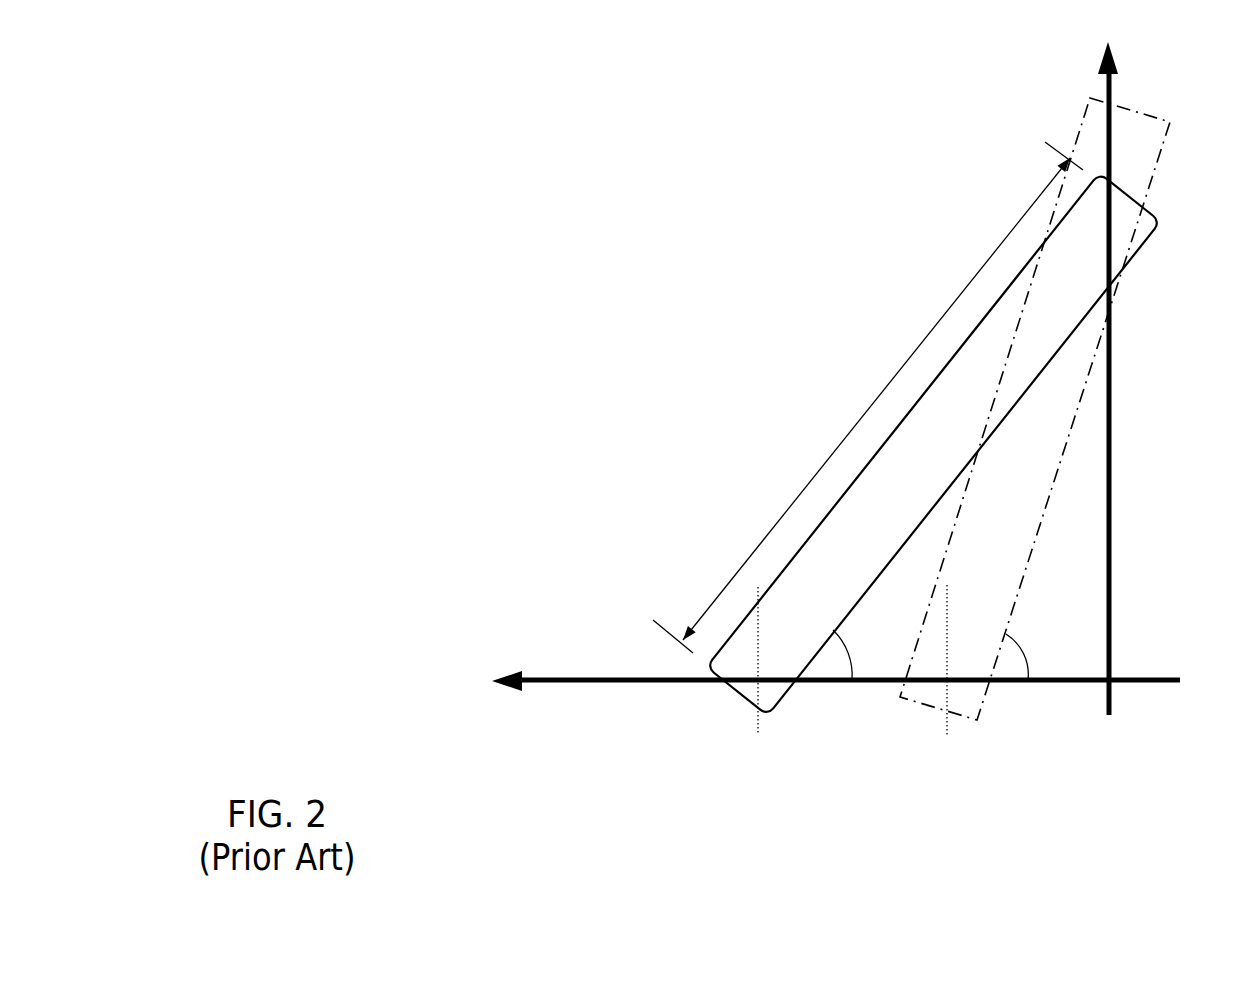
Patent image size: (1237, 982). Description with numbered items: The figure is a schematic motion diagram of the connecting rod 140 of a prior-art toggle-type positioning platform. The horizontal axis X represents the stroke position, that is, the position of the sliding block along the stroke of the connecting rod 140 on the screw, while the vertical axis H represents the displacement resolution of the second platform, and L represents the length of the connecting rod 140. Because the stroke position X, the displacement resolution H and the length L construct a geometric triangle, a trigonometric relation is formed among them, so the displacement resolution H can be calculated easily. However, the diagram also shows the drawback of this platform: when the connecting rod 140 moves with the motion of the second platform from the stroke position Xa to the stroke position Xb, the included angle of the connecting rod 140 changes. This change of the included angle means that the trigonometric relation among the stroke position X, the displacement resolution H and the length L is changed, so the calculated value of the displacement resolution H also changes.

The connecting rod 140 is at (855, 487).
The length of the connecting rod L is at (868, 397).
The displacement resolution of the second platform H is at (1132, 376).
The stroke position X is at (836, 703).
The first stroke position Xa is at (761, 682).
The second stroke position Xb is at (951, 681).